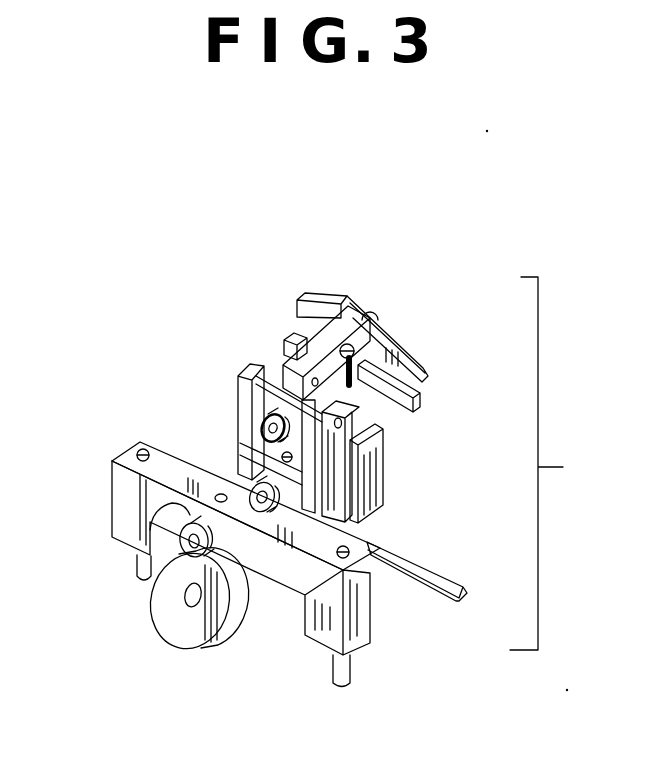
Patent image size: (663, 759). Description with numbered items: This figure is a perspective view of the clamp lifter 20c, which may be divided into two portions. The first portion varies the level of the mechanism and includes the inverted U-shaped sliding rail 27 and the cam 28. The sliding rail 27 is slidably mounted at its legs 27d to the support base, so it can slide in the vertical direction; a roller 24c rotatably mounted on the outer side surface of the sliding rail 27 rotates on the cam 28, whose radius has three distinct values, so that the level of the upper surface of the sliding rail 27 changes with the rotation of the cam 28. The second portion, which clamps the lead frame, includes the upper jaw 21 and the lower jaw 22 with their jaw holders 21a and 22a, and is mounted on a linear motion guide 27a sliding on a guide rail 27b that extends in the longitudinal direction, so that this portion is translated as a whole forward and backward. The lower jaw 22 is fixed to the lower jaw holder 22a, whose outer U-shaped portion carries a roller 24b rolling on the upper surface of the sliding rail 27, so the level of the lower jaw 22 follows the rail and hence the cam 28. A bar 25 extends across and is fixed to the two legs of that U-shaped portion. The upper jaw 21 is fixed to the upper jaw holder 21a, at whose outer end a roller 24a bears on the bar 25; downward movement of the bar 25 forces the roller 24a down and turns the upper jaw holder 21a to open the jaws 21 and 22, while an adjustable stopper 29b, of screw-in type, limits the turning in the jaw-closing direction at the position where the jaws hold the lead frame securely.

The clamp lifter 20c is at (564, 463).
The upper jaw 21 is at (394, 330).
The upper jaw holder 21a is at (280, 353).
The lower jaw 22 is at (412, 416).
The lower jaw holder 22a is at (360, 484).
The roller 24a is at (250, 418).
The roller 24b is at (248, 458).
The roller 24c is at (148, 502).
The bar 25 is at (233, 395).
The sliding rail 27 is at (322, 616).
The linear motion guide 27a is at (372, 542).
The guide rail 27b is at (408, 578).
The legs 27d is at (135, 564).
The cam 28 is at (172, 622).
The adjustable stopper 29b is at (348, 344).